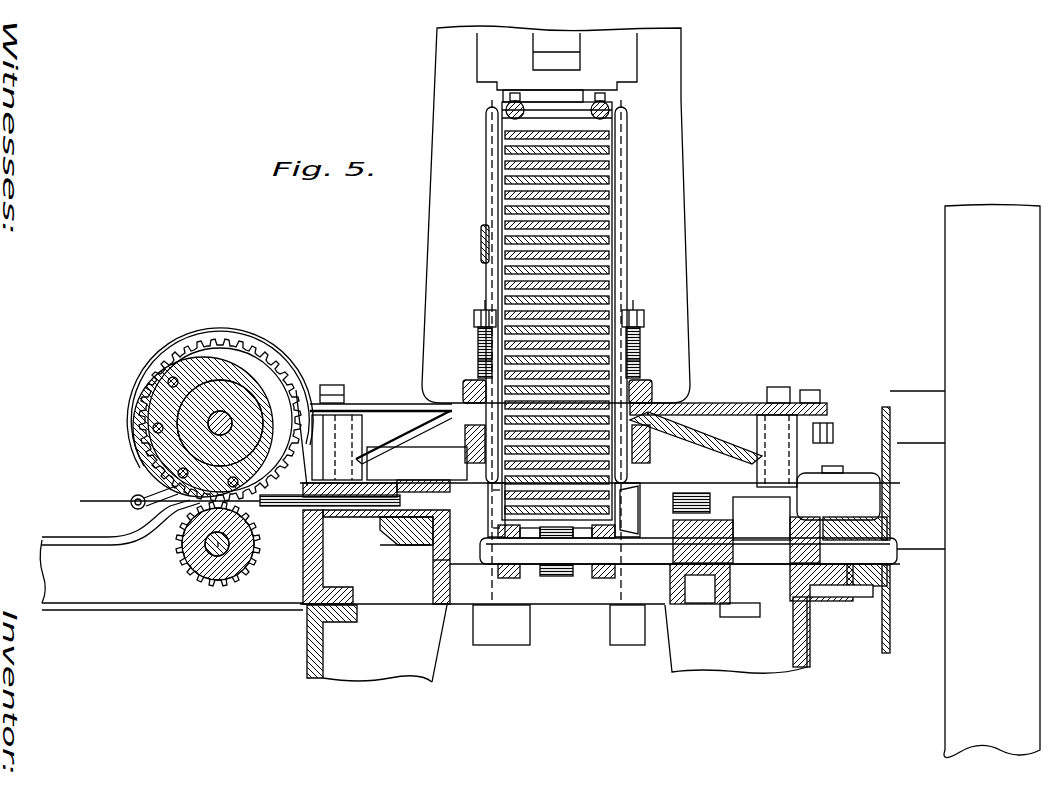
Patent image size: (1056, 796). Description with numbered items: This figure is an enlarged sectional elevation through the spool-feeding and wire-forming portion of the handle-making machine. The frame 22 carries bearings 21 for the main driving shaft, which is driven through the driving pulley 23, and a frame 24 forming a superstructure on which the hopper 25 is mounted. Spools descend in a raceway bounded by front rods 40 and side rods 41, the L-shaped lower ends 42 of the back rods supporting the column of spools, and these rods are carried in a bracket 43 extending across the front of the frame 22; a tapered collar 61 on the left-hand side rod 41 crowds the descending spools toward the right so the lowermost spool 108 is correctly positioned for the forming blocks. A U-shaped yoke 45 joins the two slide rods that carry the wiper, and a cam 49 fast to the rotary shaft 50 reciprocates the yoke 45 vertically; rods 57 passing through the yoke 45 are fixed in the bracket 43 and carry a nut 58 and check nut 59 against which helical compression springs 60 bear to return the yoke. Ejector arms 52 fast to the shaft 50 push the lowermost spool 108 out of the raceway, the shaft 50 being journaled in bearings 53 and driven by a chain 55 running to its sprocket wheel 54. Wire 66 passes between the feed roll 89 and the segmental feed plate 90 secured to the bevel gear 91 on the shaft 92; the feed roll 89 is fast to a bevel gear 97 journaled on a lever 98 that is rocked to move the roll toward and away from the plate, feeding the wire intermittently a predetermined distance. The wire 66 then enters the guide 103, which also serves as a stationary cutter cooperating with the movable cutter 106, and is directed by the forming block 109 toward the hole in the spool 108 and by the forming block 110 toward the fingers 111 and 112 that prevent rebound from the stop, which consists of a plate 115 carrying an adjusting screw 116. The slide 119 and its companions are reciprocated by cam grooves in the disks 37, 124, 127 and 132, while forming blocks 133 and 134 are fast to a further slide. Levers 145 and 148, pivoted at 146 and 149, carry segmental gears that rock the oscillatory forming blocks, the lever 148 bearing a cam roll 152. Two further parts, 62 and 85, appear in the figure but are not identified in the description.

The bearings 21 is at (857, 473).
The frame 22 is at (434, 606).
The driving pulley 23 is at (945, 377).
The frame 24 is at (686, 126).
The hopper 25 is at (637, 62).
The disk 37 is at (504, 645).
The front rods 40 is at (504, 100).
The side rods 41 is at (487, 185).
The lower ends 42 is at (500, 530).
The bracket 43 is at (465, 452).
The yoke 45 is at (470, 400).
The cam 49 is at (558, 576).
The rotary shaft 50 is at (763, 541).
The ejector arms 52 is at (522, 578).
The bearings 53 is at (700, 578).
The sprocket wheel 54 is at (892, 607).
The chain 55 is at (892, 439).
The rods 57 is at (478, 344).
The nut 58 is at (474, 321).
The check nut 59 is at (478, 312).
The helical compression springs 60 is at (478, 363).
The tapered collar 61 is at (481, 242).
The frame arm 62 is at (154, 611).
The wire 66 is at (111, 501).
The eye 85 is at (132, 506).
The feed roll 89 is at (224, 582).
The segmental feed plate 90 is at (130, 426).
The bevel gear 91 is at (258, 356).
The shaft 92 is at (226, 420).
The bevel gear 97 is at (183, 564).
The lever 98 is at (195, 580).
The guide 103 is at (376, 542).
The movable cutter 106 is at (383, 562).
The lowermost spool 108 is at (520, 530).
The forming block 109 is at (440, 522).
The forming block 110 is at (630, 497).
The finger 111 is at (688, 493).
The finger 112 is at (662, 510).
The plate 115 is at (716, 495).
The screw 116 is at (733, 508).
The slide 119 is at (364, 551).
The disk 124 is at (374, 622).
The disk 127 is at (740, 620).
The disk 132 is at (629, 645).
The forming block 133 is at (418, 578).
The forming block 134 is at (668, 600).
The lever 145 is at (388, 394).
The pivot 146 is at (335, 385).
The lever 148 is at (736, 403).
The pivot 149 is at (778, 387).
The cam roll 152 is at (834, 432).